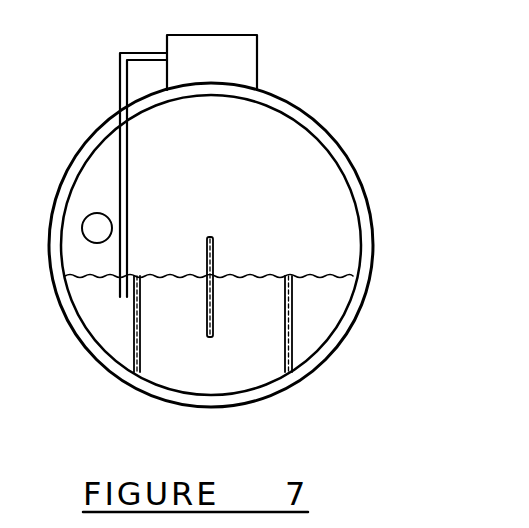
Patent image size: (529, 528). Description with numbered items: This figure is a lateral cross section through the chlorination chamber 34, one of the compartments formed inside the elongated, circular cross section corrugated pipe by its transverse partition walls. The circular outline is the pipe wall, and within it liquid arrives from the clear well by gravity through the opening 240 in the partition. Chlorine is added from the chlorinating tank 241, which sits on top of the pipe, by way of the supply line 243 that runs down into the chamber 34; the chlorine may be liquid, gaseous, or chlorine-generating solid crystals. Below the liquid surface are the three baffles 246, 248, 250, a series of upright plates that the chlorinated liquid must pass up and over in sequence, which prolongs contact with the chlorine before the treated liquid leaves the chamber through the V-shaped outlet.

The chlorination chamber 34 is at (214, 245).
The opening 240 is at (93, 228).
The chlorinating tank 241 is at (237, 62).
The supply line 243 is at (121, 82).
The baffle 246 is at (132, 342).
The baffle 248 is at (203, 318).
The baffle 250 is at (283, 340).